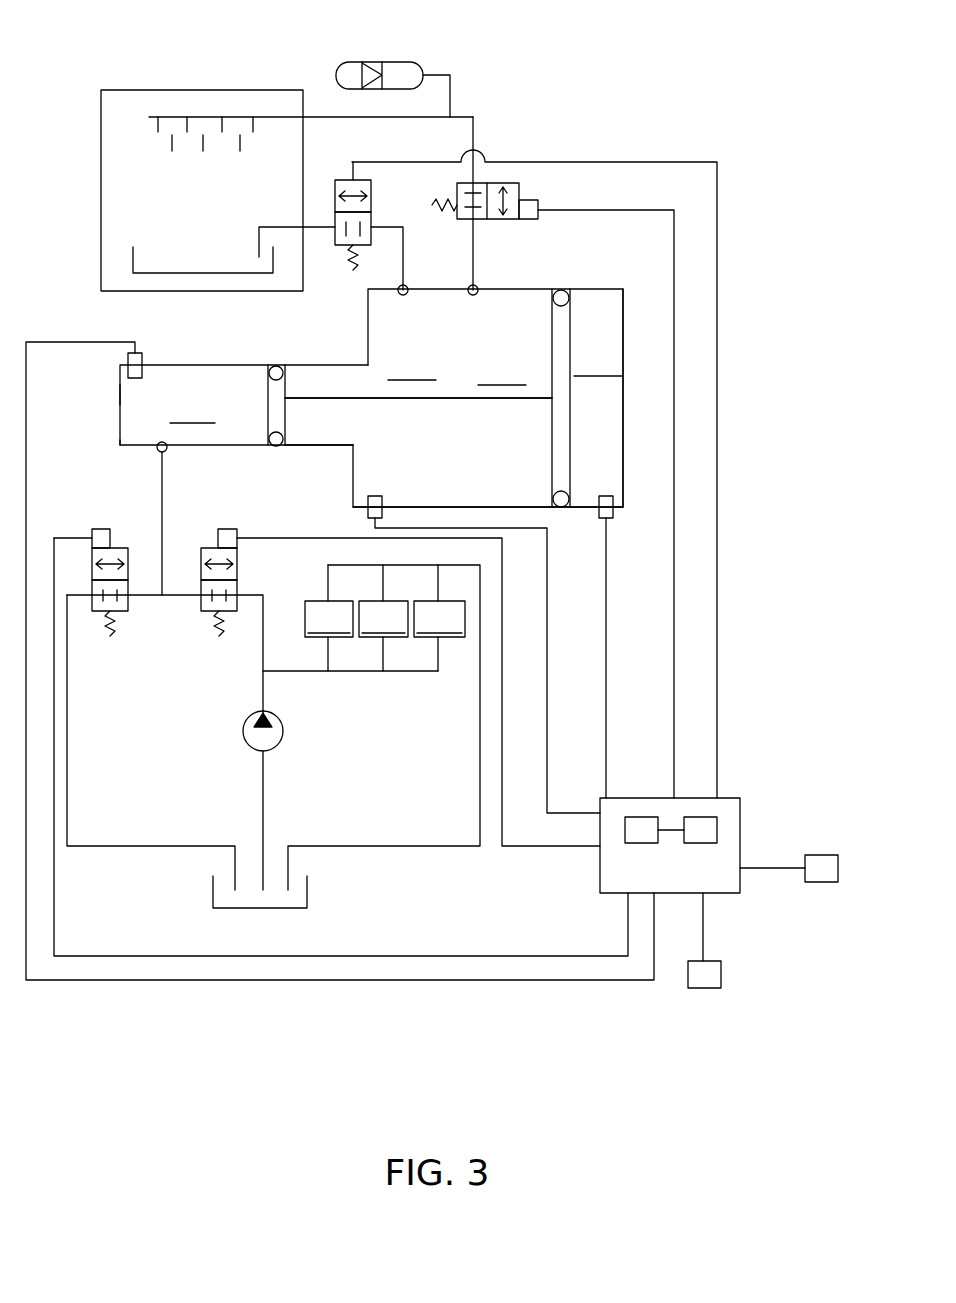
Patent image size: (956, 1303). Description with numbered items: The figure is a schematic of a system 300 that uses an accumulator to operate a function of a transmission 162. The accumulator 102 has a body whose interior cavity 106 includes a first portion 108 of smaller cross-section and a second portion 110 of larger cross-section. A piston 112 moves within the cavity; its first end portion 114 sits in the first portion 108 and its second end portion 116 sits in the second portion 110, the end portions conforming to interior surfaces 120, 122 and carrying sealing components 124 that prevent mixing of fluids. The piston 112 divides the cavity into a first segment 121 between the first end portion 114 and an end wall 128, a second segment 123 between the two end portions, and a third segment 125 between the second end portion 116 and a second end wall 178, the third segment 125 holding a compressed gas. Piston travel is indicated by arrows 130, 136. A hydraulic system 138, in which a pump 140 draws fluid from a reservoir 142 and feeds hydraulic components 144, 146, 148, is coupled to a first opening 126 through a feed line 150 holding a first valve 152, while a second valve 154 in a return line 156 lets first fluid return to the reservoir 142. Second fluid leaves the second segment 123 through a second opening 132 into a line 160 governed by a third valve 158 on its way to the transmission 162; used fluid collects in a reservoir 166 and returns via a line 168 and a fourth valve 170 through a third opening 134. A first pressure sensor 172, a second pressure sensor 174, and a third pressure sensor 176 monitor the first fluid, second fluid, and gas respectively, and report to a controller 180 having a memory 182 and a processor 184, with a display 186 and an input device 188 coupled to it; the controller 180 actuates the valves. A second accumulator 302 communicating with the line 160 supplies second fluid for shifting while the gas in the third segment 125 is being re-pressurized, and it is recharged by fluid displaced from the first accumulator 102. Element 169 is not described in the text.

The accumulator 102 is at (300, 447).
The interior cavity 106 is at (502, 371).
The first portion 108 is at (140, 427).
The second portion 110 is at (522, 293).
The piston 112 is at (397, 400).
The first end portion 114 is at (283, 389).
The second end portion 116 is at (568, 316).
The interior surface 120 is at (190, 364).
The first segment 121 is at (192, 409).
The interior surface 122 is at (448, 507).
The second segment 123 is at (412, 366).
The sealing component 124 is at (278, 366).
The third segment 125 is at (598, 362).
The first opening 126 is at (166, 452).
The end wall 128 is at (120, 394).
The arrow 130 is at (378, 1051).
The second opening 132 is at (471, 293).
The third opening 134 is at (409, 287).
The arrow 136 is at (530, 1051).
The hydraulic system 138 is at (123, 859).
The pump 140 is at (273, 752).
The reservoir 142 is at (285, 910).
The hydraulic component 144 is at (329, 618).
The hydraulic component 146 is at (383, 618).
The hydraulic component 148 is at (439, 618).
The feed line 150 is at (251, 594).
The first valve 152 is at (208, 548).
The second valve 154 is at (120, 548).
The return line 156 is at (67, 731).
The third valve 158 is at (519, 188).
The line 160 is at (463, 117).
The transmission 162 is at (293, 90).
The reservoir 166 is at (133, 250).
The line 168 is at (293, 227).
The fluid level indicator 169 is at (232, 116).
The fourth valve 170 is at (334, 185).
The first pressure sensor 172 is at (154, 362).
The second pressure sensor 174 is at (368, 517).
The third pressure sensor 176 is at (613, 517).
The second end wall 178 is at (623, 487).
The controller 180 is at (740, 827).
The memory 182 is at (642, 843).
The processor 184 is at (693, 843).
The display 186 is at (707, 988).
The input device 188 is at (827, 882).
The system 300 is at (597, 80).
The second accumulator 302 is at (417, 62).